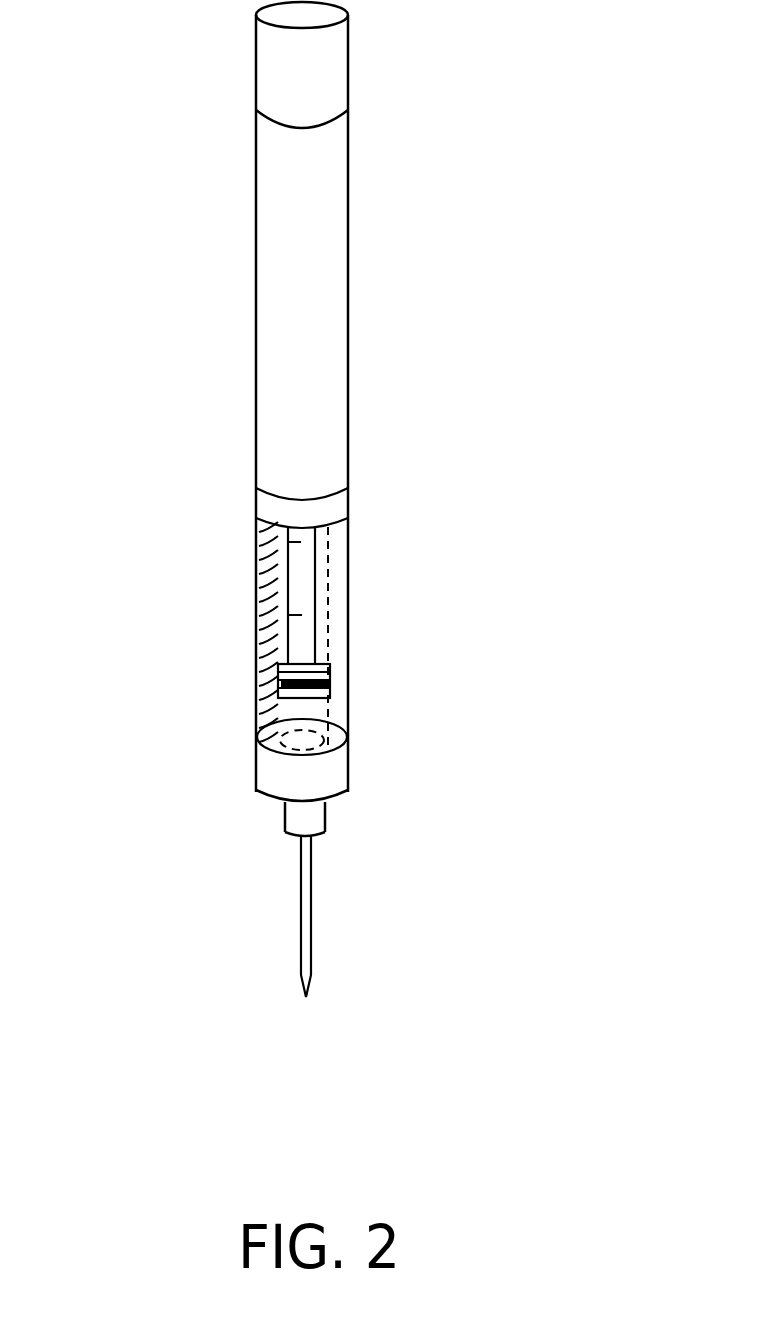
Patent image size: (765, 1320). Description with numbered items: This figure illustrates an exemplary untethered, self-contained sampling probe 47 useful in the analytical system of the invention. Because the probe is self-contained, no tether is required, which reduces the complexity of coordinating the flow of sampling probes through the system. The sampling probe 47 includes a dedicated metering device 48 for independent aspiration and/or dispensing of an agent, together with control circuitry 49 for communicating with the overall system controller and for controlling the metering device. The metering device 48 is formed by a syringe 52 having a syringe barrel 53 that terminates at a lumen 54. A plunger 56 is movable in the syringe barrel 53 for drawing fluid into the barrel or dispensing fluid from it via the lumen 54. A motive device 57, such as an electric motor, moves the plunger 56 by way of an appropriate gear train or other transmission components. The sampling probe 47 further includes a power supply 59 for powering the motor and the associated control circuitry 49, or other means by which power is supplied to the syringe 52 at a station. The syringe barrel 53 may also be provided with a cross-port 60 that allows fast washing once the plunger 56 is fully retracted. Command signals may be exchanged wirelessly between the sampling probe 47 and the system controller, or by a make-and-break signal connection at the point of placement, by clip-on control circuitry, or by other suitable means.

The sampling probe 47 is at (150, 76).
The metering device 48 is at (404, 630).
The control circuitry 49 is at (368, 57).
The syringe 52 is at (360, 718).
The syringe barrel 53 is at (258, 712).
The lumen 54 is at (312, 900).
The plunger 56 is at (330, 665).
The motive device 57 is at (270, 332).
The power supply 59 is at (358, 495).
The cross-port 60 is at (343, 540).